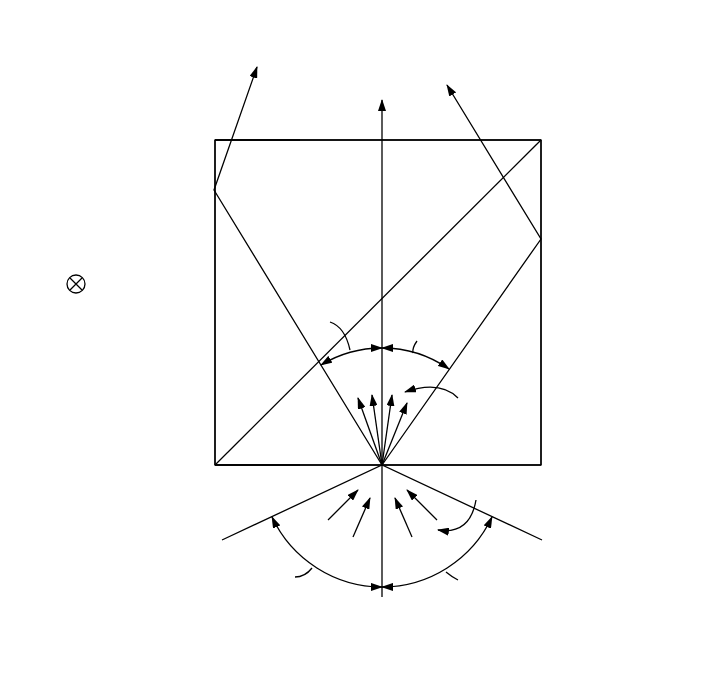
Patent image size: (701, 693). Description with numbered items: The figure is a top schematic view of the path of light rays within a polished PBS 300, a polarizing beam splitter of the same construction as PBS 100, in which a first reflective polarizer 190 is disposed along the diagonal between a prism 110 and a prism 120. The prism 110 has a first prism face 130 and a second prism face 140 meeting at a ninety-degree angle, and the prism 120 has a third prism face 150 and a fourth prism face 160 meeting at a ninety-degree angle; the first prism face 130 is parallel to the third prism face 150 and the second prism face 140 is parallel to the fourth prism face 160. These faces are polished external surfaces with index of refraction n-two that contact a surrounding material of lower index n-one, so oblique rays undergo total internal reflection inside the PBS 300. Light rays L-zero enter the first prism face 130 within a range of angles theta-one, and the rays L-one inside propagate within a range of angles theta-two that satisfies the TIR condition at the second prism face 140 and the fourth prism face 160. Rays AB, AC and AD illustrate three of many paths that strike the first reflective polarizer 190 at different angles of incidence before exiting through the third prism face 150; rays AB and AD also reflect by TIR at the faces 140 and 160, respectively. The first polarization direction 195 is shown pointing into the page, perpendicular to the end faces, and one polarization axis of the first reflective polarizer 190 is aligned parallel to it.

The polished PBS 300 is at (165, 70).
The PBS 100 is at (212, 193).
The prism 110 is at (542, 466).
The prism 120 is at (215, 141).
The first prism face 130 is at (228, 467).
The second prism face 140 is at (542, 448).
The third prism face 150 is at (224, 140).
The fourth prism face 160 is at (214, 388).
The first reflective polarizer 190 is at (243, 432).
The first polarization direction 195 is at (76, 274).